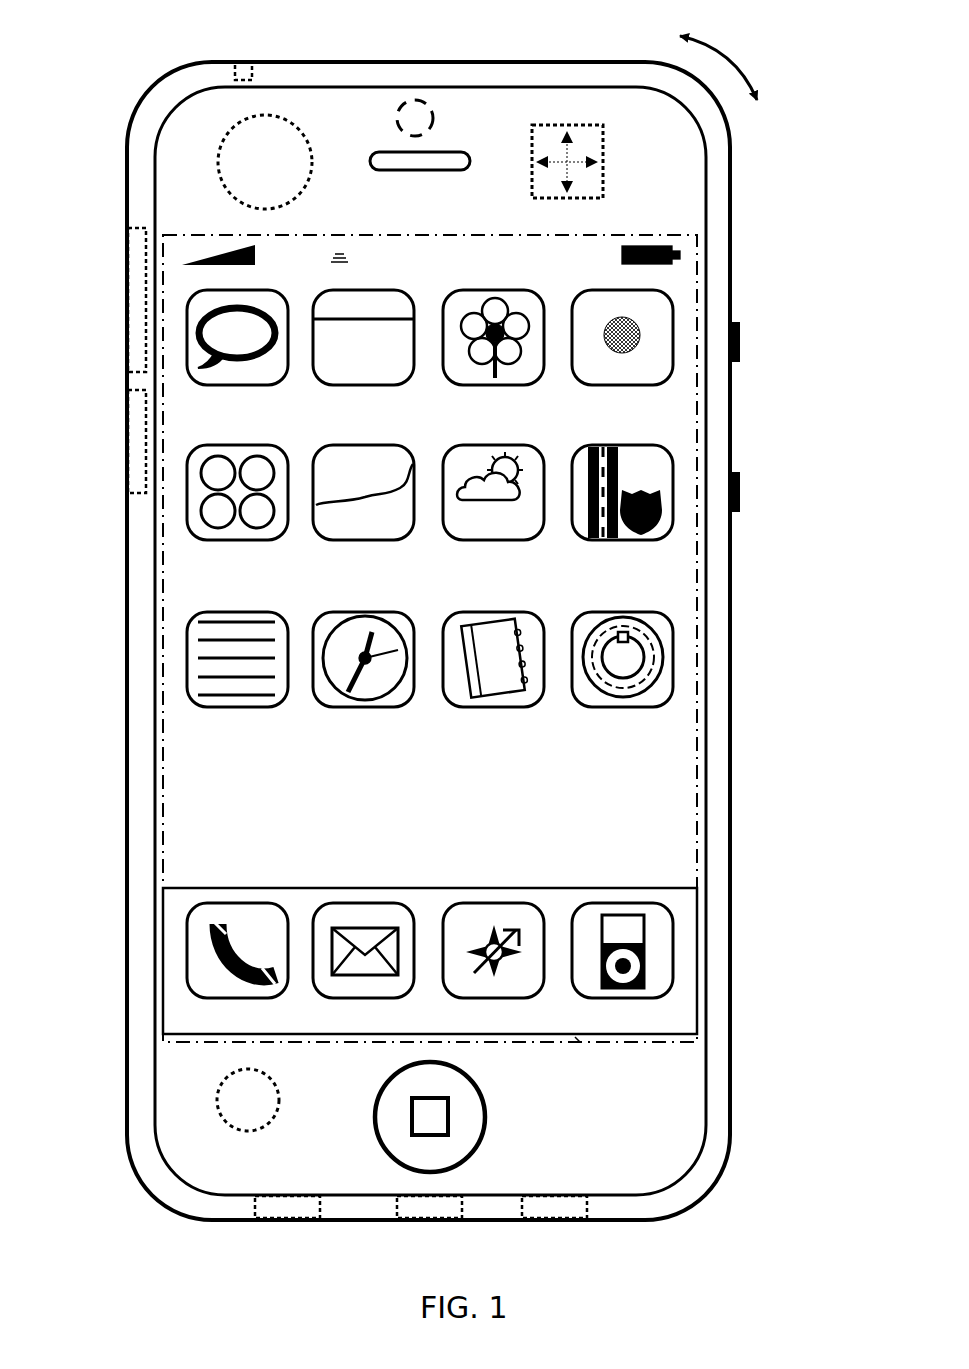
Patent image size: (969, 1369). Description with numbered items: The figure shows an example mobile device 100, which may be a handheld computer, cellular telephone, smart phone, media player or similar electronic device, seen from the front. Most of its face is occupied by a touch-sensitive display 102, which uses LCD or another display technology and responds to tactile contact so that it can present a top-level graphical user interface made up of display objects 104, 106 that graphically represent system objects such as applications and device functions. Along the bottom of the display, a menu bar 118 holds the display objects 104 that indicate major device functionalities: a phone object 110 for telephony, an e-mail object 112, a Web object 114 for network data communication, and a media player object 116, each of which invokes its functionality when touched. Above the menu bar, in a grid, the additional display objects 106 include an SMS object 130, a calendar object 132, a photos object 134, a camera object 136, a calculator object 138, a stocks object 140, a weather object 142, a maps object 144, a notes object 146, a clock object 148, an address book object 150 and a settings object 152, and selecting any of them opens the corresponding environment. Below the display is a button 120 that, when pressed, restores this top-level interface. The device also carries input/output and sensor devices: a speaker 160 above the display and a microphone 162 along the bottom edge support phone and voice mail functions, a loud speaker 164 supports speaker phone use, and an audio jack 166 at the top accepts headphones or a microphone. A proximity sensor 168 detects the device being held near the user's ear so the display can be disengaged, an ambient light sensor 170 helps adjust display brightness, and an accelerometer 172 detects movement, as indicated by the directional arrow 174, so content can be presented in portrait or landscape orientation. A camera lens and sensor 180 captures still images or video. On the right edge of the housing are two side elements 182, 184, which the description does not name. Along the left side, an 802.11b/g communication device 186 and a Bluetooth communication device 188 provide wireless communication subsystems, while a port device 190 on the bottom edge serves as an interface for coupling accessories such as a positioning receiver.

The mobile device 100 is at (513, 62).
The touch-sensitive display 102 is at (630, 235).
The display objects 104 is at (690, 903).
The display objects 106 is at (690, 284).
The phone object 110 is at (237, 903).
The e-mail object 112 is at (365, 903).
The Web object 114 is at (494, 903).
The media player object 116 is at (623, 903).
The menu bar 118 is at (578, 1040).
The button 120 is at (486, 1113).
The SMS object 130 is at (278, 385).
The calendar object 132 is at (405, 385).
The photos object 134 is at (536, 385).
The camera object 136 is at (668, 385).
The calculator object 138 is at (278, 540).
The stocks object 140 is at (405, 540).
The weather object 142 is at (536, 540).
The maps object 144 is at (668, 540).
The notes object 146 is at (278, 707).
The clock object 148 is at (405, 707).
The address book object 150 is at (536, 707).
The settings object 152 is at (668, 707).
The speaker 160 is at (395, 171).
The microphone 162 is at (320, 1205).
The loud speaker 164 is at (587, 1205).
The audio jack 166 is at (253, 70).
The proximity sensor 168 is at (219, 175).
The ambient light sensor 170 is at (264, 1124).
The accelerometer 172 is at (604, 165).
The directional arrow 174 is at (745, 62).
The camera lens and sensor 180 is at (436, 114).
The push button 182 is at (740, 342).
The volume button 184 is at (740, 492).
The 802.11b/g communication device 186 is at (130, 228).
The Bluetooth communication device 188 is at (130, 390).
The port device 190 is at (462, 1205).